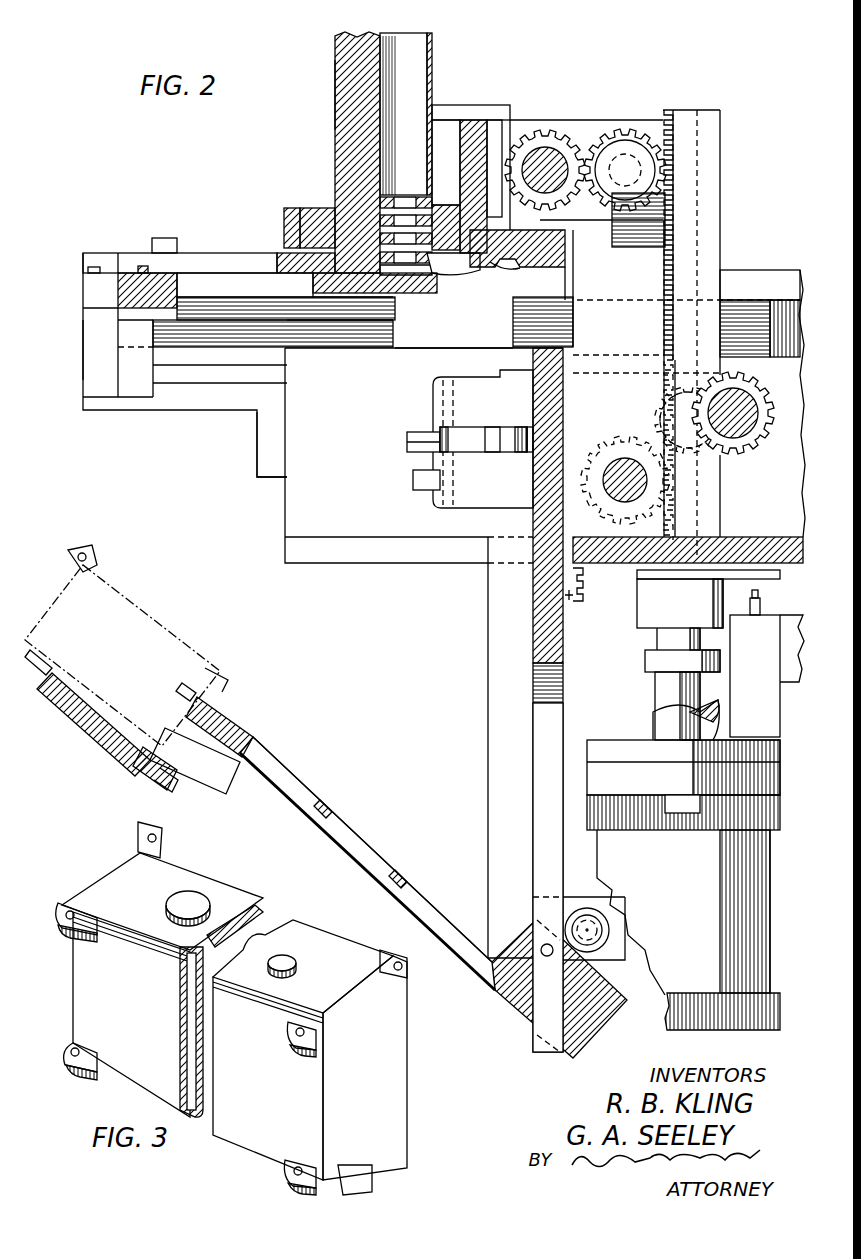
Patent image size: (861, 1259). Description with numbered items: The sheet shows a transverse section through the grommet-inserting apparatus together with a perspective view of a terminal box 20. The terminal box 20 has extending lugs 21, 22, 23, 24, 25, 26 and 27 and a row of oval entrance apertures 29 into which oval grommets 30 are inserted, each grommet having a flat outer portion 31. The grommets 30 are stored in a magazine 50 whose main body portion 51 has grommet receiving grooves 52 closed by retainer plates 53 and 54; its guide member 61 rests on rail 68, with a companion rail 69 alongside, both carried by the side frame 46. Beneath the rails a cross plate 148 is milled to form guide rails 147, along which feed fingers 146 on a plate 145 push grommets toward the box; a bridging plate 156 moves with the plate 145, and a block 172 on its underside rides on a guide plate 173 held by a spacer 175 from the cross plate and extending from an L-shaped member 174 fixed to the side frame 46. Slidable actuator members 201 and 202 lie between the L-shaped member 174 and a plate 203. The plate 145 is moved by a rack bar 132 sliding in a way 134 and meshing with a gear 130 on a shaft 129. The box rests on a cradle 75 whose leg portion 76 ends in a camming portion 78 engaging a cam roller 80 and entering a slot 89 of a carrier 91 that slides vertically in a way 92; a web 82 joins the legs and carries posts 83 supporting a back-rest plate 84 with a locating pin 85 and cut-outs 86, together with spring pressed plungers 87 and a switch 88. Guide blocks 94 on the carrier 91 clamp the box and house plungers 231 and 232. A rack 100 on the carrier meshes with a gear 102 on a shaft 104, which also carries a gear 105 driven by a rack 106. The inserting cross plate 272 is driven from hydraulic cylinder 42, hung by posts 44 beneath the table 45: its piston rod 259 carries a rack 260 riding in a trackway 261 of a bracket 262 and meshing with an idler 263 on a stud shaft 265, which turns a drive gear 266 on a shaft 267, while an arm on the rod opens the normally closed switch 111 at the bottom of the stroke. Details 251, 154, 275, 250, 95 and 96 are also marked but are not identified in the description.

In FIG. 2, the magazine 50 is at (376, 150).
In FIG. 2, the main body portion 51 is at (360, 78).
In FIG. 2, the grommet receiving grooves 52 is at (412, 52).
In FIG. 2, the retainer plate 53 is at (335, 100).
In FIG. 2, the retainer plate 54 is at (432, 68).
In FIG. 2, the grommet 30 is at (413, 197).
In FIG. 3, the grommet 30 is at (222, 925).
In FIG. 2, the guide rails 147 is at (462, 272).
In FIG. 2, the flange 251 is at (500, 268).
In FIG. 2, the cross plate 272 is at (475, 135).
In FIG. 2, the rail 69 is at (446, 207).
In FIG. 2, the guide member 61 is at (315, 210).
In FIG. 2, the rail 68 is at (287, 218).
In FIG. 2, the feed fingers 146 is at (240, 258).
In FIG. 2, the bridging plate 156 is at (160, 240).
In FIG. 2, the bracket 154 is at (142, 266).
In FIG. 2, the plate 145 is at (178, 290).
In FIG. 2, the cross plate 148 is at (410, 294).
In FIG. 2, the block 172 is at (127, 398).
In FIG. 2, the L-shaped member 174 is at (83, 347).
In FIG. 2, the actuator member 201 is at (198, 368).
In FIG. 2, the actuator member 202 is at (218, 386).
In FIG. 2, the plate 203 is at (247, 414).
In FIG. 2, the rack bar 132 is at (380, 335).
In FIG. 2, the guide plate 173 is at (292, 323).
In FIG. 2, the spacer 175 is at (332, 300).
In FIG. 2, the way 134 is at (492, 342).
In FIG. 2, the side frame 46 is at (792, 272).
In FIG. 2, the slidable carrier 91 is at (545, 632).
In FIG. 2, the way 92 is at (535, 708).
In FIG. 2, the rack 100 is at (573, 600).
In FIG. 2, the housing plate 275 is at (540, 220).
In FIG. 2, the housing block 250 is at (566, 250).
In FIG. 2, the drive gear 266 is at (540, 132).
In FIG. 2, the shaft 267 is at (548, 148).
In FIG. 2, the idler 263 is at (610, 132).
In FIG. 2, the stud shaft 265 is at (624, 158).
In FIG. 2, the rack 260 is at (694, 110).
In FIG. 2, the bracket 262 is at (722, 205).
In FIG. 2, the trackway 261 is at (700, 183).
In FIG. 2, the table 45 is at (765, 538).
In FIG. 2, the gear 102 is at (618, 437).
In FIG. 2, the shaft 104 is at (614, 465).
In FIG. 2, the gear 105 is at (664, 410).
In FIG. 2, the rack 106 is at (662, 395).
In FIG. 2, the shaft 129 is at (750, 432).
In FIG. 2, the gear 130 is at (742, 445).
In FIG. 2, the guide blocks 94 is at (470, 496).
In FIG. 2, the plunger 231 is at (407, 438).
In FIG. 2, the plunger 232 is at (413, 480).
In FIG. 2, the pin 95 is at (507, 428).
In FIG. 2, the spring 96 is at (530, 445).
In FIG. 2, the piston rod 259 is at (655, 682).
In FIG. 2, the supporting posts 44 is at (655, 728).
In FIG. 2, the switch 111 is at (762, 600).
In FIG. 2, the hydraulic cylinder 42 is at (770, 895).
In FIG. 2, the cam roller 80 is at (603, 946).
In FIG. 2, the camming portion 78 is at (600, 1018).
In FIG. 2, the cradle 75 is at (326, 794).
In FIG. 2, the leg portion 76 is at (370, 858).
In FIG. 2, the slot 89 is at (535, 897).
In FIG. 2, the web 82 is at (242, 728).
In FIG. 2, the switch 88 is at (212, 782).
In FIG. 2, the plate 84 is at (85, 720).
In FIG. 2, the cut-outs 86 is at (140, 772).
In FIG. 2, the posts 83 is at (174, 784).
In FIG. 2, the locating pin 85 is at (42, 672).
In FIG. 2, the spring pressed plungers 87 is at (200, 693).
In FIG. 2, the terminal box 20 is at (150, 612).
In FIG. 3, the terminal box 20 is at (308, 916).
In FIG. 3, the lug 22 is at (137, 838).
In FIG. 3, the lug 25 is at (66, 905).
In FIG. 3, the lug 26 is at (70, 1068).
In FIG. 3, the entrance apertures 29 is at (200, 950).
In FIG. 3, the flat outer portion 31 is at (240, 912).
In FIG. 3, the lug 21 is at (392, 952).
In FIG. 3, the lug 23 is at (294, 1050).
In FIG. 3, the lug 24 is at (285, 1180).
In FIG. 3, the lug 27 is at (372, 1180).